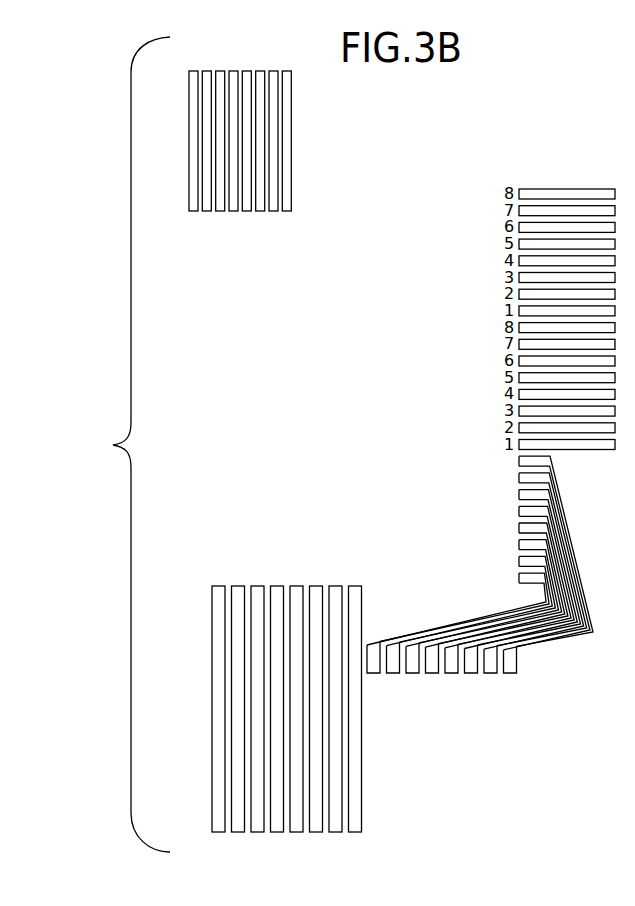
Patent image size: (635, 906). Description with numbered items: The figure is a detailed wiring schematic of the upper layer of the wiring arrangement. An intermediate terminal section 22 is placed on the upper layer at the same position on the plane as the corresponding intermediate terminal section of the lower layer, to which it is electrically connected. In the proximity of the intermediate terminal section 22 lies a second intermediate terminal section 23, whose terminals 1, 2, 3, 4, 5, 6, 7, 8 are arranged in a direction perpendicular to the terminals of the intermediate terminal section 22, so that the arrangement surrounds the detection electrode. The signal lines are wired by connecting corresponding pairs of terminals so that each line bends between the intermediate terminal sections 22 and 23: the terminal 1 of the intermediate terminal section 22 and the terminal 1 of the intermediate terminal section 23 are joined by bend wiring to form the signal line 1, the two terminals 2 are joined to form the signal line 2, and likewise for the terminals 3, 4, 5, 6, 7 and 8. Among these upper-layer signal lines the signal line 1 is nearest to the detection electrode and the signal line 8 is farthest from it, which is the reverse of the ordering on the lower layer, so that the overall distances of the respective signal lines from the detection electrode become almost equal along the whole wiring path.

The terminal / signal line 1 is at (218, 709).
The terminal / signal line 2 is at (238, 709).
The terminal / signal line 3 is at (257, 709).
The terminal / signal line 4 is at (277, 709).
The terminal / signal line 5 is at (296, 709).
The terminal / signal line 6 is at (316, 709).
The terminal / signal line 7 is at (335, 709).
The terminal / signal line 8 is at (355, 709).
The intermediate terminal section 22 is at (517, 700).
The intermediate terminal section 23 is at (502, 462).